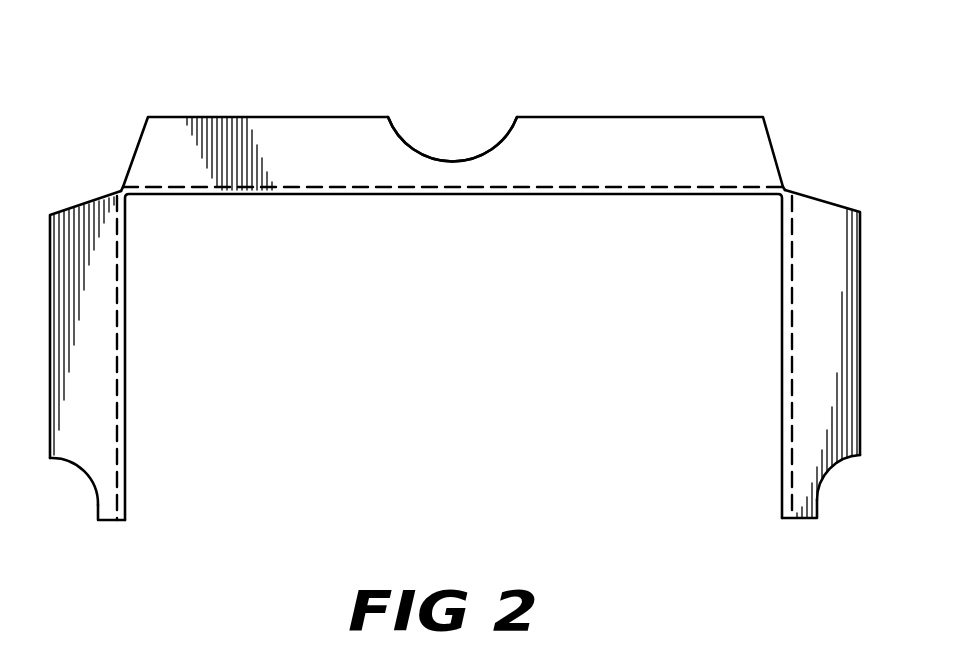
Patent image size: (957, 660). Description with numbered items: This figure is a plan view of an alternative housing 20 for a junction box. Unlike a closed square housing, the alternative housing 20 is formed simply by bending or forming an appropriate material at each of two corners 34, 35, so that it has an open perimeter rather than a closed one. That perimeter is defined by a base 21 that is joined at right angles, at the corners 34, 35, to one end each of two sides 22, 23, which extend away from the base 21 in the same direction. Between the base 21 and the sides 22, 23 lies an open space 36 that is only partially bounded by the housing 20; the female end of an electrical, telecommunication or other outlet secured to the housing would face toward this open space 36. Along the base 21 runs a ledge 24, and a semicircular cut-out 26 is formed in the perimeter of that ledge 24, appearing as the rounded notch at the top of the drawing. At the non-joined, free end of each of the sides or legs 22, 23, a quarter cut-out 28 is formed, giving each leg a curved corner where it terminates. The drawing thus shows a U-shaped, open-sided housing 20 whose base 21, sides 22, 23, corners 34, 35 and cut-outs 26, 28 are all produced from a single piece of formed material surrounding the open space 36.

The alternative housing 20 is at (322, 72).
The base 21 is at (485, 196).
The side 22 is at (127, 328).
The side 23 is at (783, 327).
The ledge 24 is at (102, 375).
The semicircular cut-out 26 is at (505, 138).
The quarter cut-out 28 is at (97, 502).
The corner 34 is at (122, 188).
The corner 35 is at (790, 188).
The open space 36 is at (453, 411).